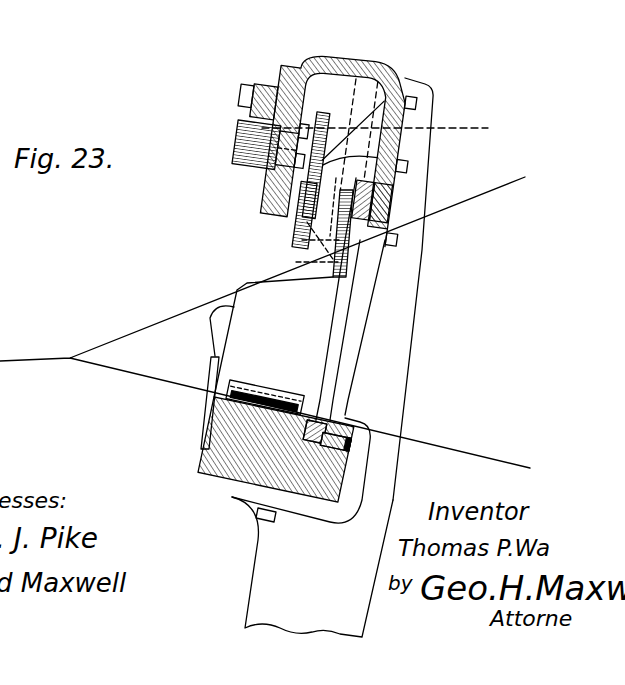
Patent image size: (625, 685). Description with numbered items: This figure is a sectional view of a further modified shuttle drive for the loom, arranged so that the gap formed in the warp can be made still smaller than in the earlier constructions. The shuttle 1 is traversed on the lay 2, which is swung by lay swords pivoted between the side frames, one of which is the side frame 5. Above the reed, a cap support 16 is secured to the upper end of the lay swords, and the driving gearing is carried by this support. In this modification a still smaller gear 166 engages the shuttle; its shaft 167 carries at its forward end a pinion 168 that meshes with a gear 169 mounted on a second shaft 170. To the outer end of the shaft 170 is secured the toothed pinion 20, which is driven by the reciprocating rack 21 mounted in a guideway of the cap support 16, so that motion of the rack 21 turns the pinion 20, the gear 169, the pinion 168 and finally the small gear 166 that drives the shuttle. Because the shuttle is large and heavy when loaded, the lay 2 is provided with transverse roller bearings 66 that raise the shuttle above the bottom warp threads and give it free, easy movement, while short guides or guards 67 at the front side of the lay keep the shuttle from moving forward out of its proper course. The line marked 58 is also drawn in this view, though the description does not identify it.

The shuttle 1 is at (316, 340).
The lay 2 is at (232, 462).
The side frame 5 is at (303, 457).
The cap support 16 is at (366, 62).
The toothed pinion 20 is at (247, 140).
The rack bar 21 is at (256, 106).
The wire 58 is at (70, 358).
The roller bearings 66 is at (271, 388).
The guide 67 is at (211, 365).
The gear 166 is at (348, 266).
The shaft 167 is at (300, 249).
The pinion 168 is at (298, 222).
The gear 169 is at (304, 191).
The shaft 170 is at (392, 128).